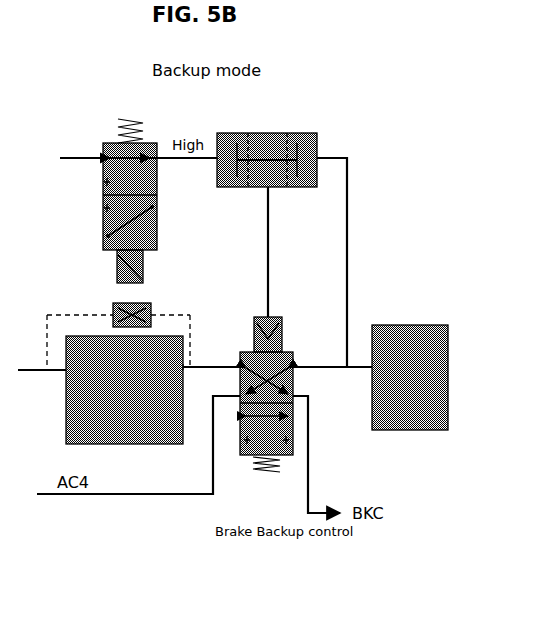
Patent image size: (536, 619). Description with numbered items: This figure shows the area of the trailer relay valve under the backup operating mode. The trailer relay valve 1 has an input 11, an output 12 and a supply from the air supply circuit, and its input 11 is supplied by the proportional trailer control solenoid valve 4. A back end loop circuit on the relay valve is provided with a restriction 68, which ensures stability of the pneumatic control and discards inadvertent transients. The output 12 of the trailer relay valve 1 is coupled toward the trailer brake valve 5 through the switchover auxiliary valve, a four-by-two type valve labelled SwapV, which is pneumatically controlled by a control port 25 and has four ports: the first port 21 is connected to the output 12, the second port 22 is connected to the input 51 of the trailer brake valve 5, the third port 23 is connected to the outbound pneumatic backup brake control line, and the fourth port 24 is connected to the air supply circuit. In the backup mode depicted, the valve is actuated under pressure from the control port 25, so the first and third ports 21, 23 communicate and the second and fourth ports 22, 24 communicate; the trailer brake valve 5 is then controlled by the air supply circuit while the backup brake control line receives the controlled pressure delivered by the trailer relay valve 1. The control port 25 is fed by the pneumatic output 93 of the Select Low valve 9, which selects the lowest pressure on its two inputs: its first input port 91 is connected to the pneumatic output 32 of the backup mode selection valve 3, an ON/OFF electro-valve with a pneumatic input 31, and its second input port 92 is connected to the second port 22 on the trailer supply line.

The trailer relay valve 1 is at (111, 355).
The backup mode selection valve 3 is at (98, 178).
The pneumatic input 31 is at (103, 155).
The pneumatic output 32 is at (157, 160).
The proportional trailer control solenoid valve 4 is at (64, 410).
The trailer brake valve 5 is at (392, 322).
The input of trailer brake valve 51 is at (368, 370).
The Select Low valve 9 is at (270, 130).
The first input port 91 is at (216, 163).
The second input port 92 is at (318, 157).
The pneumatic output 93 is at (268, 190).
The input 11 is at (60, 368).
The output 12 is at (192, 370).
The first port 21 is at (212, 358).
The second port 22 is at (332, 358).
The third port 23 is at (316, 446).
The fourth port 24 is at (138, 437).
The control port 25 is at (272, 316).
The restriction 68 is at (113, 305).